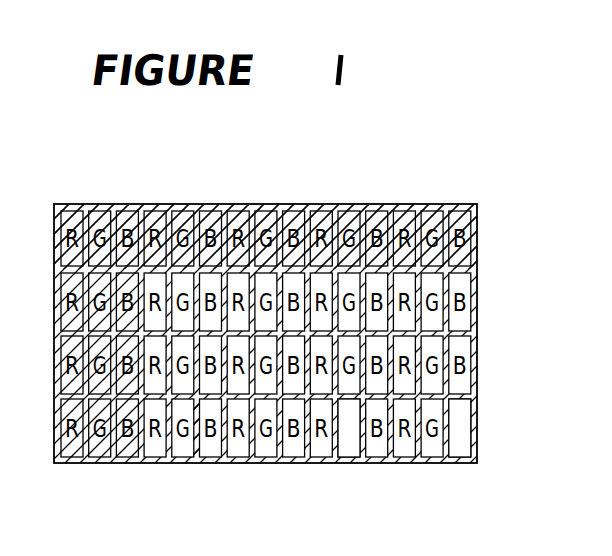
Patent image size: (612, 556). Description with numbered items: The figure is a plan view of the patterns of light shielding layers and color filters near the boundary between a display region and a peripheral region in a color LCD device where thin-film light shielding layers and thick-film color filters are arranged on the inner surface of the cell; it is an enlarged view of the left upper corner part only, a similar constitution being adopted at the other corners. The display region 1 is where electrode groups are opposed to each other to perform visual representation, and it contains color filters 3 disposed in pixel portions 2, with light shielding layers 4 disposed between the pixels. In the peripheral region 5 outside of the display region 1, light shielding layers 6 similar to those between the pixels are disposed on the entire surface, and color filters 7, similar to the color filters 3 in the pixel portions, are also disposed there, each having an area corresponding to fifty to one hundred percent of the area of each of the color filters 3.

The display region 1 is at (288, 367).
The pixel portions 2 is at (459, 447).
The color filters 3 is at (344, 444).
The light shielding layers 4 is at (485, 280).
The peripheral region 5 is at (485, 210).
The light shielding layers 6 is at (113, 212).
The color filters 7 is at (265, 207).